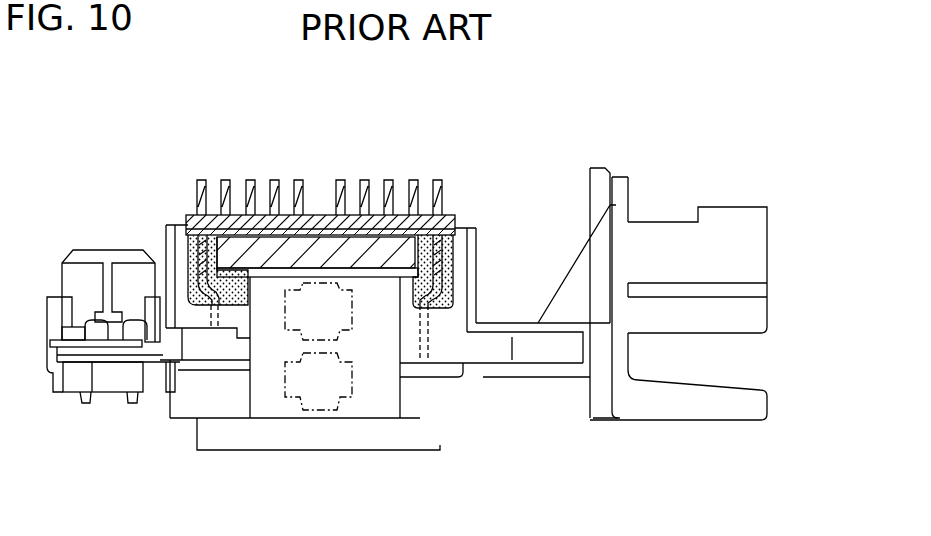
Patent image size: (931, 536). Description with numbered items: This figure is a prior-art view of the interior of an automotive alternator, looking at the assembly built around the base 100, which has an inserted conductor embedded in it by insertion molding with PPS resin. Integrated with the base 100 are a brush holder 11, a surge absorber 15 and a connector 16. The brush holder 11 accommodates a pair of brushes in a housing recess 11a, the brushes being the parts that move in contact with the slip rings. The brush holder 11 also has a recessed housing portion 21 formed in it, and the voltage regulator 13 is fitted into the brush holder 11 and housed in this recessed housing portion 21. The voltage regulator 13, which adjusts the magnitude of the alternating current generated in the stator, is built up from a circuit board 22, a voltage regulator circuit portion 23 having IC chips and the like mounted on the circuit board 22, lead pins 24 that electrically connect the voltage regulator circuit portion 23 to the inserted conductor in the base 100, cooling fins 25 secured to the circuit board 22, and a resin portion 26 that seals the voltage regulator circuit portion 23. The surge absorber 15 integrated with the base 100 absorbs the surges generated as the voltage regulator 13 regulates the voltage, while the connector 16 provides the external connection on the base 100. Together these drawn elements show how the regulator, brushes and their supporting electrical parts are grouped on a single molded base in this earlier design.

The brush holder 11 is at (273, 405).
The housing recess 11a is at (290, 325).
The voltage regulator 13 is at (455, 233).
The surge absorber 15 is at (84, 280).
The connector 16 is at (662, 408).
The recessed housing portion 21 is at (449, 265).
The circuit board 22 is at (441, 250).
The voltage regulator circuit portion 23 is at (370, 253).
The lead pins 24 is at (201, 275).
The cooling fins 25 is at (301, 214).
The resin portion 26 is at (192, 257).
The base 100 is at (527, 378).